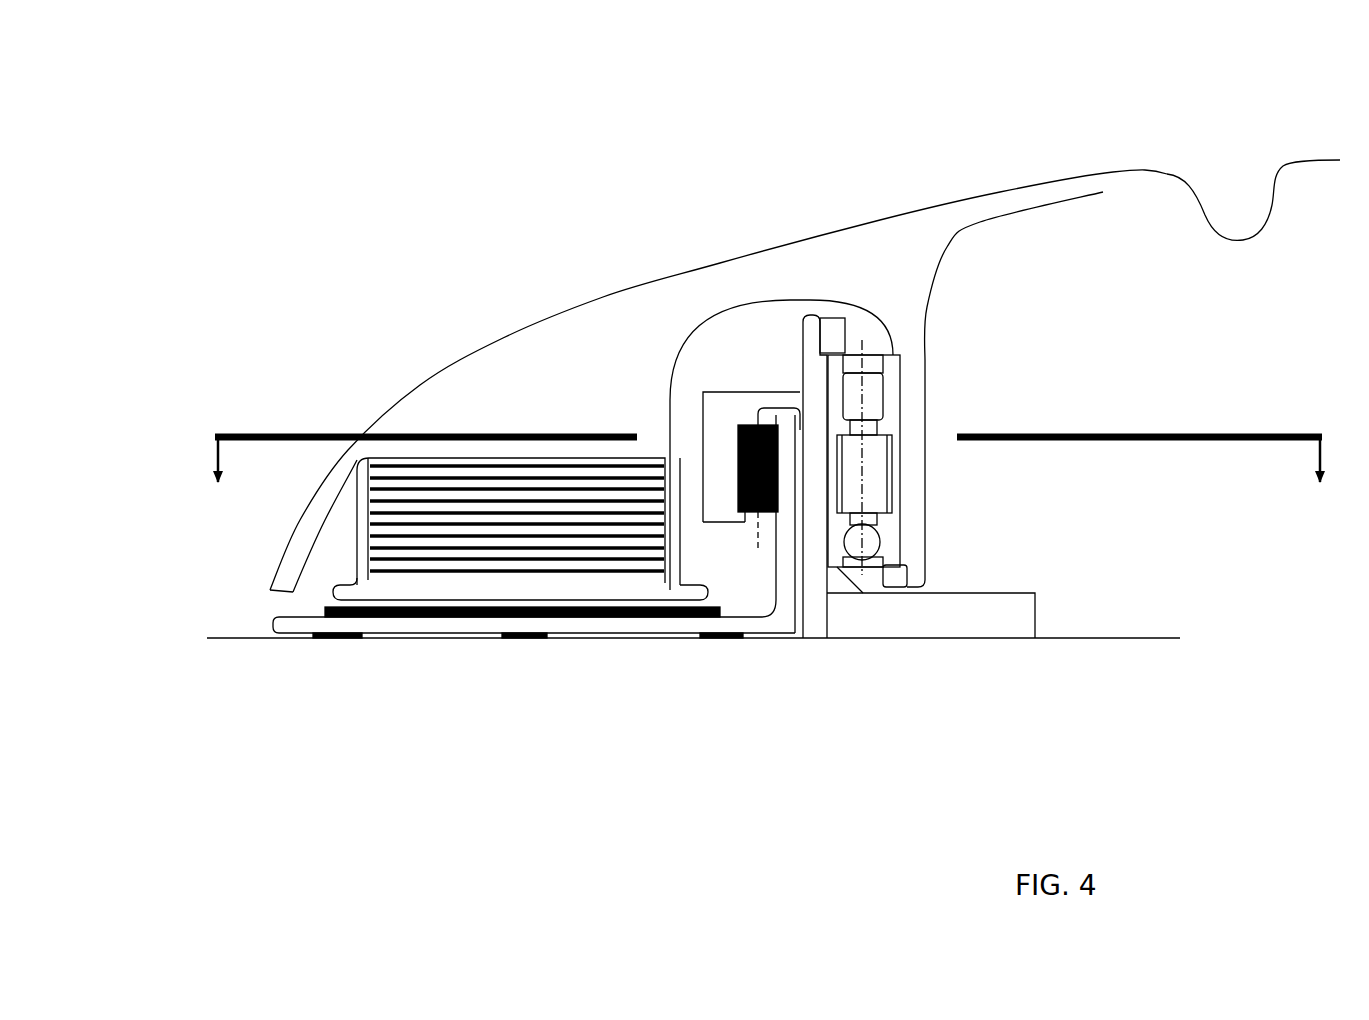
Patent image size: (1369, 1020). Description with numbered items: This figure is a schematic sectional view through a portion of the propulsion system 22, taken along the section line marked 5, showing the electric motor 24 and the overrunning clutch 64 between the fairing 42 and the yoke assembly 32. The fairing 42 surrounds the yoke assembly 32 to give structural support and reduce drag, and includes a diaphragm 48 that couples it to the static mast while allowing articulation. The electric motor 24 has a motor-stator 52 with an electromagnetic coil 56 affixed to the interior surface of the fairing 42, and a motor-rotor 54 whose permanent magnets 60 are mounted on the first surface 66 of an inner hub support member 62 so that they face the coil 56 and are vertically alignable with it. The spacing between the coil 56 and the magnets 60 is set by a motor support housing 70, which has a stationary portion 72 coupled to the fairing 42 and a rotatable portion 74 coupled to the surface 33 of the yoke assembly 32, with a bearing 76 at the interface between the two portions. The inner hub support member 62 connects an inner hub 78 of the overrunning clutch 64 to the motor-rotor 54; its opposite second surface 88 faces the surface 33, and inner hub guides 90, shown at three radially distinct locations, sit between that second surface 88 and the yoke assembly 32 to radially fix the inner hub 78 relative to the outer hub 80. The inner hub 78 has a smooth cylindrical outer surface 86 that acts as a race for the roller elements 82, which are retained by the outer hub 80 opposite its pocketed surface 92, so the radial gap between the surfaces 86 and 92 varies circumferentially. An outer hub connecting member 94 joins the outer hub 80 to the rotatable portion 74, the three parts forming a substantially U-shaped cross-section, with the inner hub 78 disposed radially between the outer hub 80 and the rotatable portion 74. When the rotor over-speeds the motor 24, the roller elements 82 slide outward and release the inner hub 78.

The section line 5- 5 is at (770, 486).
The propulsion system 22 is at (334, 284).
The electric motor 24 is at (342, 546).
The yoke assembly 32 is at (1078, 664).
The surface of the yoke assembly 33 is at (1152, 628).
The fairing 42 is at (1123, 168).
The diaphragm 48 is at (1273, 207).
The motor-stator 52 is at (433, 508).
The motor-rotor 54 is at (338, 620).
The electromagnetic coil 56 is at (360, 490).
The permanent magnet 60 is at (435, 618).
The inner hub support member 62 is at (498, 630).
The overrunning clutch 64 is at (753, 545).
The first surface of the inner hub support member 66 is at (478, 612).
The motor support housing 70 is at (937, 396).
The stationary portion 72 is at (925, 497).
The rotatable portion 74 is at (812, 393).
The bearing 76 is at (867, 538).
The inner hub 78 is at (802, 445).
The outer hub 80 is at (713, 468).
The roller elements 82 is at (738, 422).
The cylindrical outer surface 86 is at (780, 483).
The second surface of the inner hub support member 88 is at (623, 634).
The inner hub guides 90 is at (350, 636).
The pocketed surface 92 is at (745, 435).
The outer hub connecting member 94 is at (773, 393).